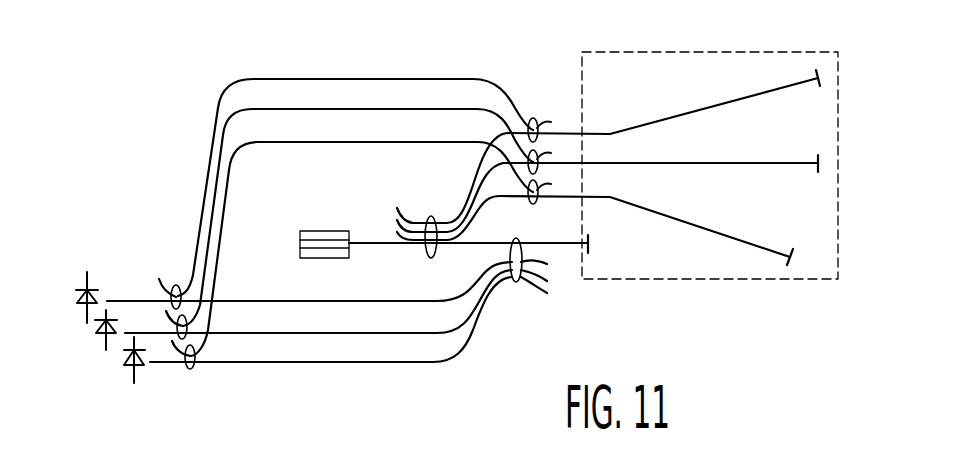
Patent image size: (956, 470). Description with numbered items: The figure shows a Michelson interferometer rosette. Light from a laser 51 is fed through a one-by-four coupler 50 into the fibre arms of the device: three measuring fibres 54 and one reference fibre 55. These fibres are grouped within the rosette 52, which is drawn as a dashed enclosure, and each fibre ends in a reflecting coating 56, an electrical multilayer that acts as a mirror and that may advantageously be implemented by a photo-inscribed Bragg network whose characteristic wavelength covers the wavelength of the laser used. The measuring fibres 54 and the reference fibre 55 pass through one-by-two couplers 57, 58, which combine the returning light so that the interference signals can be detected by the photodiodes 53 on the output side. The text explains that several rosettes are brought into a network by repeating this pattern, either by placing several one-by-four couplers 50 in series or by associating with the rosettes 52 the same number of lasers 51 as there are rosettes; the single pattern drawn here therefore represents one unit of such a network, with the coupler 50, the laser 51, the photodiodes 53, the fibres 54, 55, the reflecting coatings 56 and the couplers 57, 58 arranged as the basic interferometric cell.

The 1×4 coupler 50 is at (432, 217).
The laser 51 is at (327, 231).
The rosette 52 is at (658, 280).
The photodiodes 53 is at (116, 360).
The measuring fibres 54 is at (705, 228).
The reference fibre 55 is at (555, 243).
The reflecting coatings 56 is at (820, 73).
The 1×2 couplers 57 is at (178, 300).
The 1×2 couplers 58 is at (536, 194).